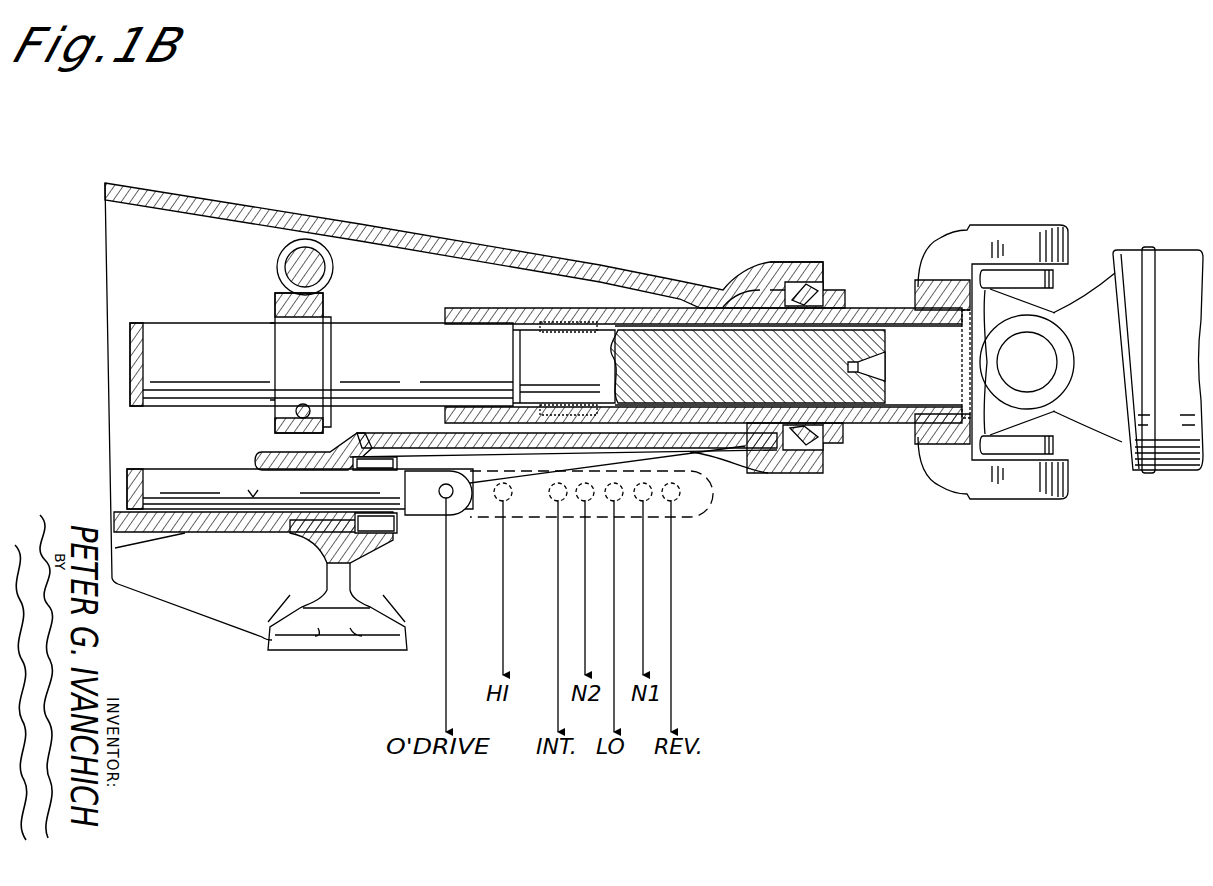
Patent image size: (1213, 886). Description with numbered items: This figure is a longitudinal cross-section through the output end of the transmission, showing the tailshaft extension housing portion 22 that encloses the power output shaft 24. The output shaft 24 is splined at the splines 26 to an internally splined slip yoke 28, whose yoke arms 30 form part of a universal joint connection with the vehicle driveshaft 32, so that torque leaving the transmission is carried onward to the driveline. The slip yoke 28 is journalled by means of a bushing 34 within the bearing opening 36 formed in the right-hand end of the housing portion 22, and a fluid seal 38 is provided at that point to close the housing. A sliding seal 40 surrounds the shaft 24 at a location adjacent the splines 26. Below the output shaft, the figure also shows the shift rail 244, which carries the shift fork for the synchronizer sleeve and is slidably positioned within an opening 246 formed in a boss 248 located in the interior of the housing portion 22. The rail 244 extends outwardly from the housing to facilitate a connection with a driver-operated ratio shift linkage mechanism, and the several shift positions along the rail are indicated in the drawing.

The tailshaft extension housing portion 22 is at (246, 176).
The power output shaft 24 is at (213, 330).
The splines 26 is at (660, 325).
The slip yoke 28 is at (775, 287).
The yoke arms 30 is at (983, 233).
The vehicle driveshaft 32 is at (1163, 257).
The bushing 34 is at (747, 440).
The bearing opening 36 is at (723, 310).
The fluid seal 38 is at (828, 292).
The sliding seal 40 is at (543, 318).
The shift rail 244 is at (197, 490).
The opening 246 is at (253, 497).
The boss 248 is at (270, 453).